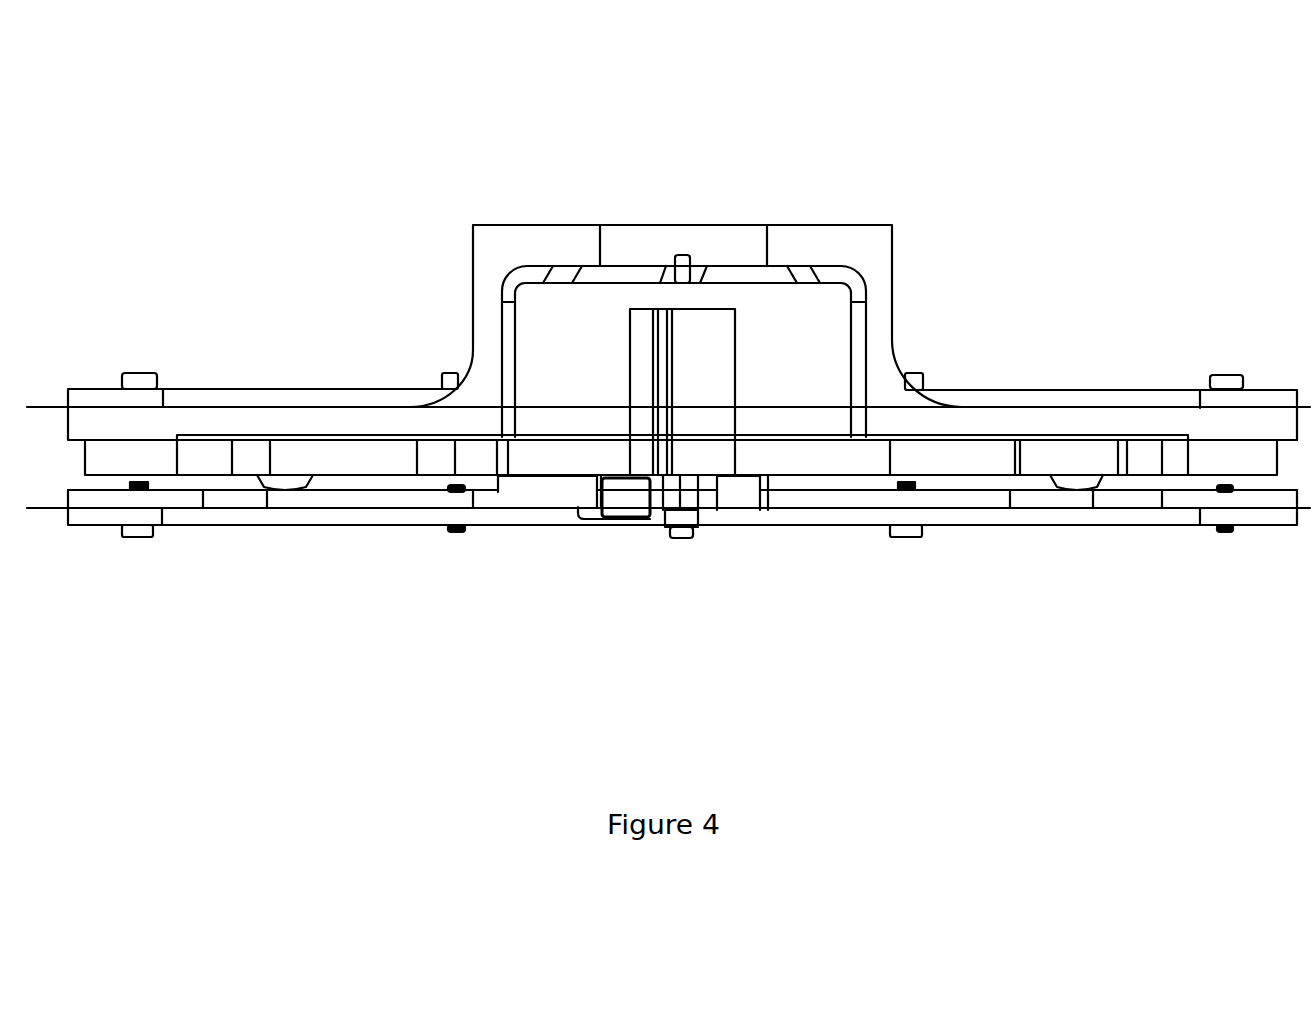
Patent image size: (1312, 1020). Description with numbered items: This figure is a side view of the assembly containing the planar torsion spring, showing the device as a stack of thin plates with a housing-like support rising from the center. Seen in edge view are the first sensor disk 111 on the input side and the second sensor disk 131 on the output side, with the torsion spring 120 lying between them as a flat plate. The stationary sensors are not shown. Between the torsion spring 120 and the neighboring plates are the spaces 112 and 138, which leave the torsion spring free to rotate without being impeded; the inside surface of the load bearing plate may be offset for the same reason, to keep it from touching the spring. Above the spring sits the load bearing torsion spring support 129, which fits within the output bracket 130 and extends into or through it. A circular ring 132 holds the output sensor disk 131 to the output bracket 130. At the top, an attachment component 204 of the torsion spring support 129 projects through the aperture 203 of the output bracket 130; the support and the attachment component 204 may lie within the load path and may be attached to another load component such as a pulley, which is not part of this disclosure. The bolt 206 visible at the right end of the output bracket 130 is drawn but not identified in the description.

The first sensor disk 111 is at (60, 507).
The space 112 is at (235, 482).
The torsion spring 120 is at (388, 462).
The load bearing torsion spring support 129 is at (835, 340).
The output bracket 130 is at (278, 420).
The second sensor disk 131 is at (47, 405).
The circular ring 132 is at (985, 388).
The space 138 is at (388, 434).
The aperture 203 is at (742, 240).
The attachment component 204 is at (683, 252).
The bolt 206 is at (1217, 375).